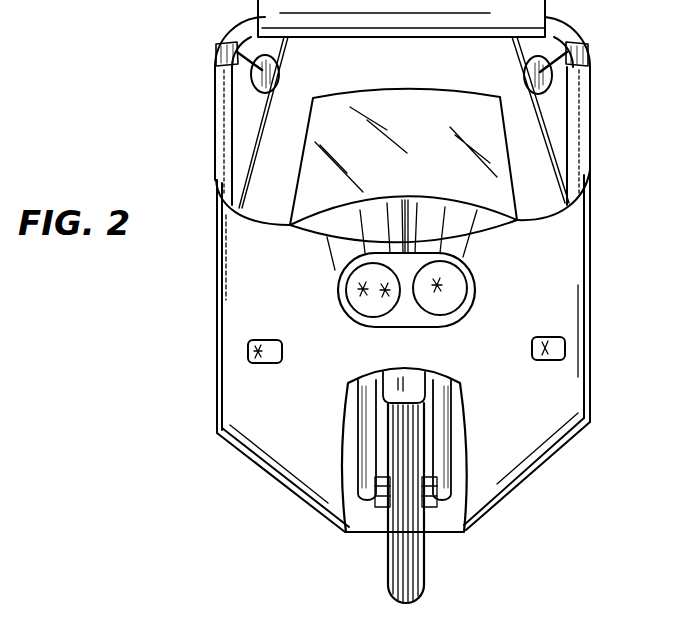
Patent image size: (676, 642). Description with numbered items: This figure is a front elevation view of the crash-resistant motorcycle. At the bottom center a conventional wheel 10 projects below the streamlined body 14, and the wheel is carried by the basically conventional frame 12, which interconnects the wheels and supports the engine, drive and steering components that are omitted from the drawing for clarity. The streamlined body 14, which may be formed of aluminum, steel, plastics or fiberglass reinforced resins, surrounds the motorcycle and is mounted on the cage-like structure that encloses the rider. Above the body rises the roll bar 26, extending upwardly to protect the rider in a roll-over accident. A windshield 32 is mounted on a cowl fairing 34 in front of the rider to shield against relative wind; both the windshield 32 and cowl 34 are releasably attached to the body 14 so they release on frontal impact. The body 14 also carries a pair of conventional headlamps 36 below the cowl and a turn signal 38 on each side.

The wheel 10 is at (410, 567).
The frame 12 is at (447, 437).
The streamlined body 14 is at (590, 272).
The roll bar 26 is at (572, 23).
The windshield 32 is at (548, 128).
The cowl fairing 34 is at (487, 238).
The headlamps 36 is at (378, 307).
The turn signals 38 is at (277, 320).